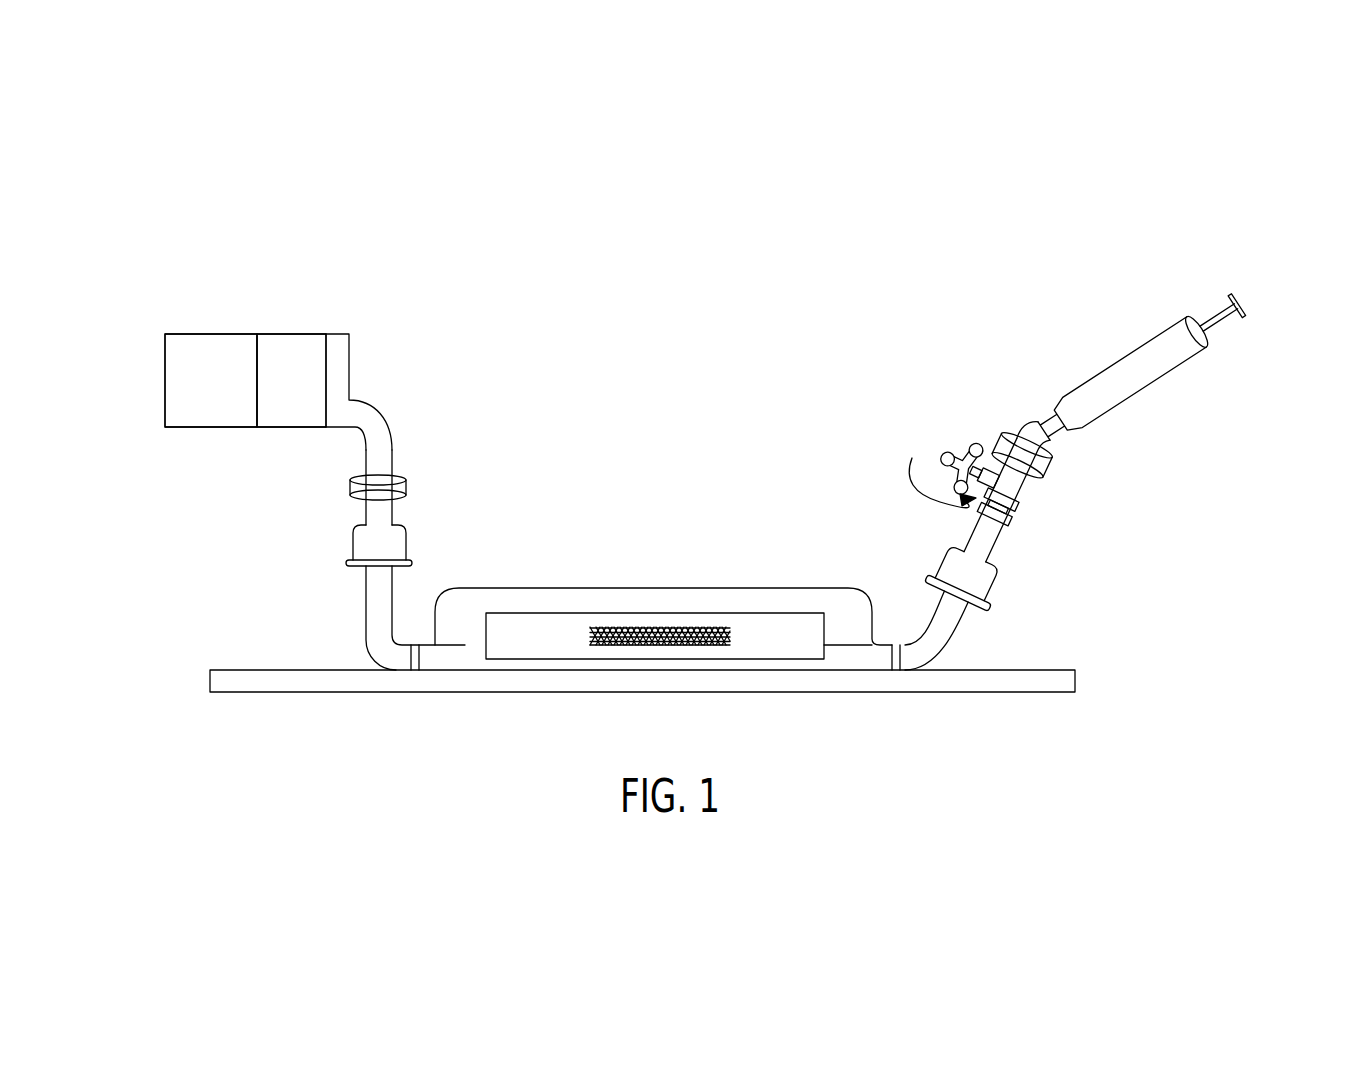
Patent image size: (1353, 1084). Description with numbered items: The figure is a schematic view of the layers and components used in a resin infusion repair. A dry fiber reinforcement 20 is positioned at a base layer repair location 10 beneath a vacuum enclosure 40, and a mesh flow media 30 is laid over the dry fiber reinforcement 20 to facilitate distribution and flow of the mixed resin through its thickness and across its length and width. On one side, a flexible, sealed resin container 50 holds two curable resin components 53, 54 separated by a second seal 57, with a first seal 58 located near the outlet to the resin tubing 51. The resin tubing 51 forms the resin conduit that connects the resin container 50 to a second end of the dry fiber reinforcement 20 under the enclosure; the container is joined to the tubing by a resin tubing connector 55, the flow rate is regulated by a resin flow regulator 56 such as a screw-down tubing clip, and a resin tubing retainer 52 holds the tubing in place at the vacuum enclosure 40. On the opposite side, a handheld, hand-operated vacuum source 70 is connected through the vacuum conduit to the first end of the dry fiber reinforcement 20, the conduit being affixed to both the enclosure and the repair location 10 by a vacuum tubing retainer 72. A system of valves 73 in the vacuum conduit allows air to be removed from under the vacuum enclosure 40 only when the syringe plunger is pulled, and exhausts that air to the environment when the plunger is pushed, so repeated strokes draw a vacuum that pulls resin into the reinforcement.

The base layer repair location 10 is at (736, 690).
The dry fiber reinforcement 20 is at (524, 656).
The mesh flow media 30 is at (624, 646).
The vacuum enclosure 40 is at (629, 587).
The flexible, sealed resin container 50 is at (221, 263).
The resin tubing 51 is at (378, 606).
The resin tubing retainer 52 is at (414, 645).
The curable resin component 53 is at (211, 356).
The curable resin component 54 is at (275, 356).
The resin tubing connector 55 is at (398, 548).
The resin flow regulator 56 is at (350, 487).
The second seal 57 is at (256, 411).
The first seal 58 is at (330, 348).
The vacuum source 70 is at (1122, 353).
The vacuum tubing retainer 72 is at (900, 645).
The system of valves 73 is at (939, 469).